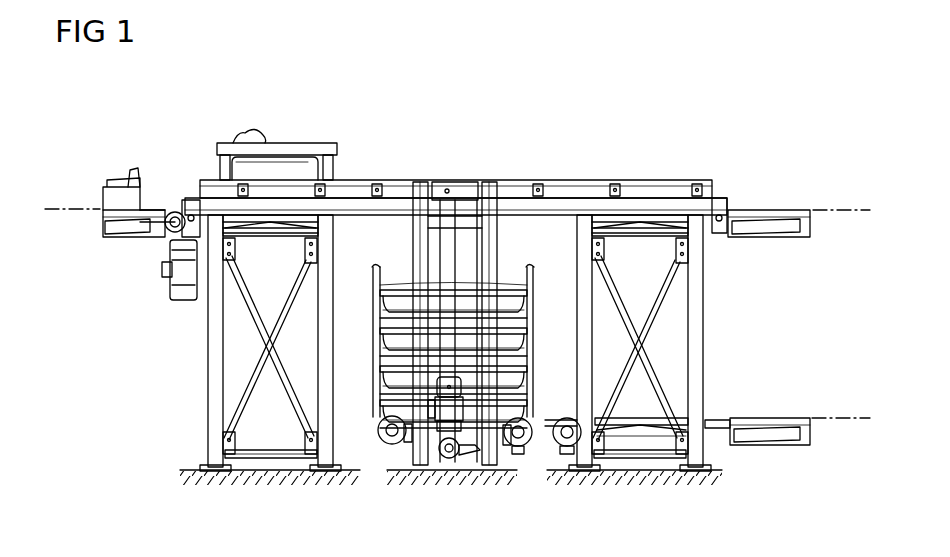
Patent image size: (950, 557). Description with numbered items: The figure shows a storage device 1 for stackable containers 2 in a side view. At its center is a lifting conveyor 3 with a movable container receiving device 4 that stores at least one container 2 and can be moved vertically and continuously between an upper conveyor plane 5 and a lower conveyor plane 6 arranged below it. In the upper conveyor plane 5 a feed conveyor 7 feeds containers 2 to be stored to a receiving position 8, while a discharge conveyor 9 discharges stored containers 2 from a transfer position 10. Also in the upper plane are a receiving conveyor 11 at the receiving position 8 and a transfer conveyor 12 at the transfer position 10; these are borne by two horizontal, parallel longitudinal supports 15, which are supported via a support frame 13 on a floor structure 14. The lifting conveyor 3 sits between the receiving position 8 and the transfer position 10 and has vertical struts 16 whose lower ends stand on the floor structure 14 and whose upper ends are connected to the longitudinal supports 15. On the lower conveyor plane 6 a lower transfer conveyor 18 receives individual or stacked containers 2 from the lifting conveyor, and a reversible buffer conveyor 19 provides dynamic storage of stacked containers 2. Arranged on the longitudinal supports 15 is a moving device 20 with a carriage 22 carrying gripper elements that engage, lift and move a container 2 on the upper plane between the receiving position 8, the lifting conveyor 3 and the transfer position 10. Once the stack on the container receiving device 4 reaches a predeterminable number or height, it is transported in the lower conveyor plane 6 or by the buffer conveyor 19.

The storage device 1 is at (758, 92).
The stackable containers 2 is at (122, 195).
The lifting conveyor 3 is at (455, 157).
The container receiving device 4 is at (388, 452).
The upper conveyor plane 5 is at (57, 208).
The lower conveyor plane 6 is at (855, 418).
The feed conveyor 7 is at (152, 209).
The receiving position 8 is at (258, 124).
The discharge conveyor 9 is at (778, 210).
The transfer position 10 is at (678, 157).
The receiving conveyor 11 is at (268, 230).
The transfer conveyor 12 is at (625, 220).
The support frame 13 is at (213, 375).
The floor structure 14 is at (268, 477).
The longitudinal supports 15 is at (572, 190).
The vertical struts 16 is at (425, 183).
The lower transfer conveyor 18 is at (640, 420).
The reversible buffer conveyor 19 is at (785, 418).
The moving device 20 is at (291, 112).
The carriage 22 is at (221, 144).